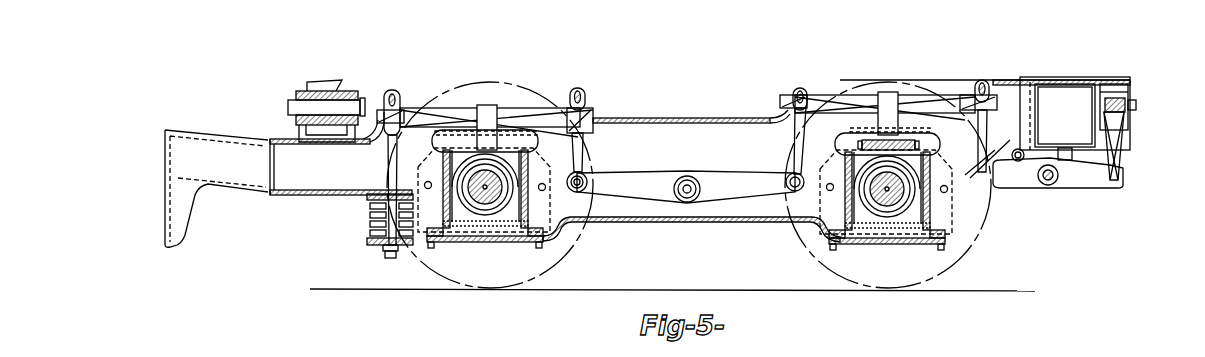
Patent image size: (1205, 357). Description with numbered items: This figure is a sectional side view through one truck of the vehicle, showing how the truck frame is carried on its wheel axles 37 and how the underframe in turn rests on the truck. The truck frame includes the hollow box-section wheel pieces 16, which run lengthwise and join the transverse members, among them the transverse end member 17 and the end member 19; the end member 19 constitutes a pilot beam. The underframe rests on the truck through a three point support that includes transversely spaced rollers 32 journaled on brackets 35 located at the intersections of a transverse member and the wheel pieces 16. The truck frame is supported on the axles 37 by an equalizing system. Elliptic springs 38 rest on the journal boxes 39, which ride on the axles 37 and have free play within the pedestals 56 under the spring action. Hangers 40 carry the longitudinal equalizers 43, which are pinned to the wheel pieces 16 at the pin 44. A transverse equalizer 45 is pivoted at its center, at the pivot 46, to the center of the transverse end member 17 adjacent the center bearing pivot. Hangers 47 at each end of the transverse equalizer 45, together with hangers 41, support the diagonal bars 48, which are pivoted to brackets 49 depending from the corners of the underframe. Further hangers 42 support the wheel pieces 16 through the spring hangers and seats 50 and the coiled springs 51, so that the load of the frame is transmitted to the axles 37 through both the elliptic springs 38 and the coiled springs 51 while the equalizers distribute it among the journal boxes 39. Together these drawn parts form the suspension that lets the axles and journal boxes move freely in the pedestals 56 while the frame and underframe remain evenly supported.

The wheel pieces 16 is at (640, 212).
The transverse end member 17 is at (1090, 105).
The end member 19 is at (170, 153).
The rollers 32 is at (312, 80).
The brackets 35 is at (345, 141).
The wheel axles 37 is at (490, 165).
The elliptic springs 38 is at (435, 120).
The journal boxes 39 is at (468, 240).
The hangers 40 is at (582, 90).
The hangers 41 is at (984, 80).
The hangers 42 is at (393, 90).
The longitudinal equalizers 43 is at (628, 183).
The pin 44 is at (690, 183).
The transverse equalizer 45 is at (1115, 96).
The pivot 46 is at (1136, 104).
The hangers 47 is at (1117, 152).
The diagonal bars 48 is at (1068, 182).
The brackets 49 is at (1040, 182).
The spring hangers and seats 50 is at (385, 248).
The coiled springs 51 is at (372, 218).
The pedestals 56 is at (410, 215).